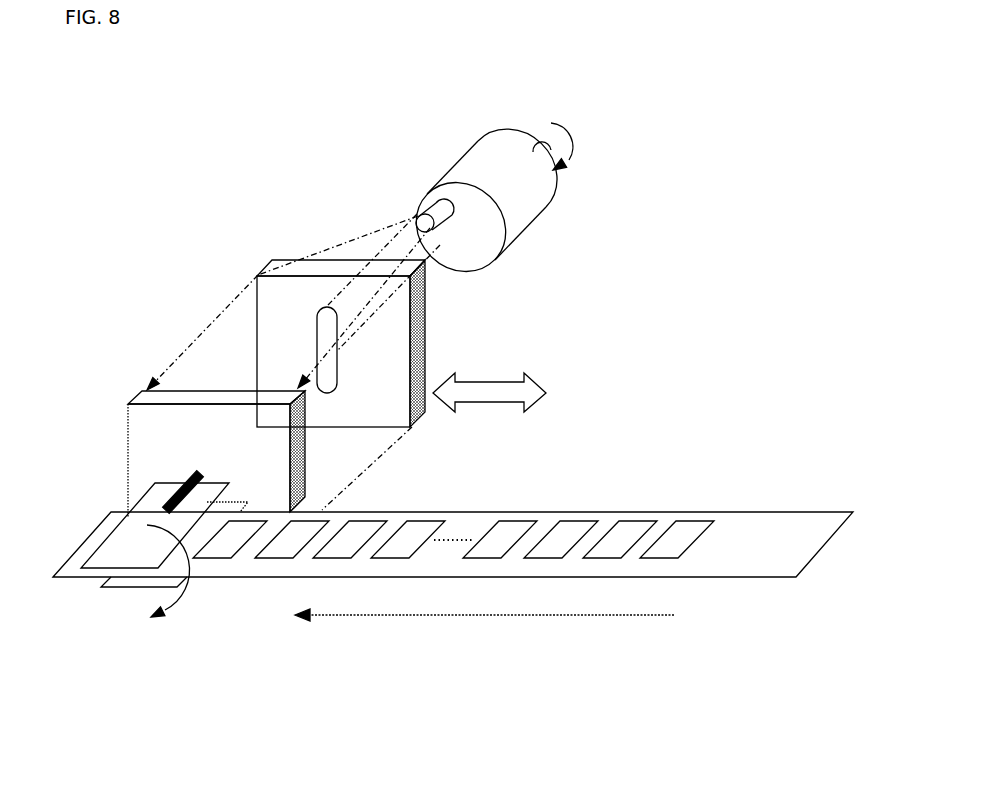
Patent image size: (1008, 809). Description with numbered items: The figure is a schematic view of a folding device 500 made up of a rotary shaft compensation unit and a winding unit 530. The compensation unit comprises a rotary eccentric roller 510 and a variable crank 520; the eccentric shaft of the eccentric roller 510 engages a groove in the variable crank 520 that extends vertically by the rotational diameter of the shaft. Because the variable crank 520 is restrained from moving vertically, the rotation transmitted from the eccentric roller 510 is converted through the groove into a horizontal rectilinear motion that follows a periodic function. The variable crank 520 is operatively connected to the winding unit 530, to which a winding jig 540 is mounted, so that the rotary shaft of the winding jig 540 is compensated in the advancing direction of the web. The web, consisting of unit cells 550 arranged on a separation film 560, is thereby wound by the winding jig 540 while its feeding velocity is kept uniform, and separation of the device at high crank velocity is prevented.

The folding device 500 is at (88, 125).
The rotary eccentric roller 510 is at (483, 147).
The variable crank 520 is at (324, 270).
The winding unit 530 is at (148, 418).
The winding jig 540 is at (128, 520).
The unit cells 550 is at (512, 530).
The separation film 560 is at (747, 527).